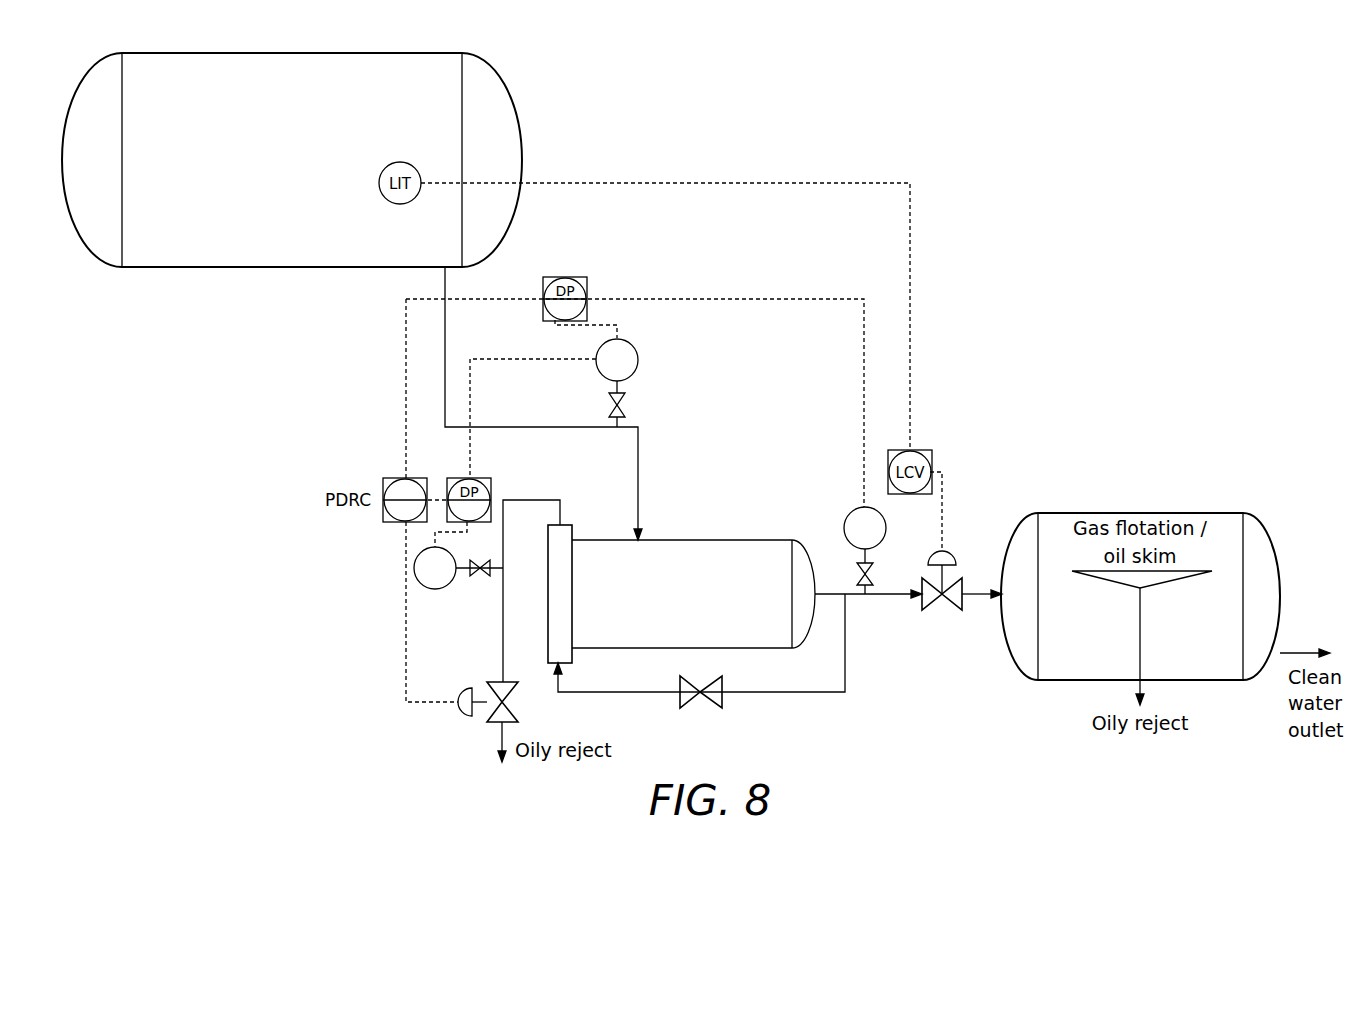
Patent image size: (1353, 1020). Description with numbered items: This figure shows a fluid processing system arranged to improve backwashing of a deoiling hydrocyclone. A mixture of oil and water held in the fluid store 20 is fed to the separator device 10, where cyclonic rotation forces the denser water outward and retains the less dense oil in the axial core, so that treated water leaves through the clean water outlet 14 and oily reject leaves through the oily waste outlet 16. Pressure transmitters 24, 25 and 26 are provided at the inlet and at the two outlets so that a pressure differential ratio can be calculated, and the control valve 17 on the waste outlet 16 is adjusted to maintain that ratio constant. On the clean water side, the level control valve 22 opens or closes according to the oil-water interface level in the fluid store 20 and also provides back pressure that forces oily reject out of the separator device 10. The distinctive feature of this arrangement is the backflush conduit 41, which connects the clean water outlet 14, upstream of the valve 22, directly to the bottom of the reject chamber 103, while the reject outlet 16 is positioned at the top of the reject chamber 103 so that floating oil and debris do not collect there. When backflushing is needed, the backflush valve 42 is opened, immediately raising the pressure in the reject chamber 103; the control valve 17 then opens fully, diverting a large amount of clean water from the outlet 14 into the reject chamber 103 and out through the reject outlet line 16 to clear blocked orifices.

The separator device 10 is at (730, 540).
The clean water outlet 14 is at (824, 593).
The oily waste outlet 16 is at (537, 500).
The control valve 17 is at (490, 722).
The fluid store 20 is at (178, 268).
The control valve 22 is at (930, 612).
The pressure transmitter 24 is at (639, 358).
The pressure transmitter 25 is at (413, 568).
The pressure transmitter 26 is at (851, 515).
The backflush conduit 41 is at (838, 695).
The backflush valve 42 is at (685, 712).
The reject chamber 103 is at (548, 655).